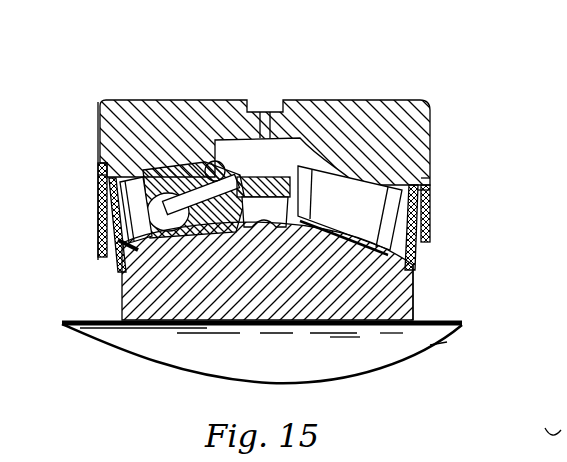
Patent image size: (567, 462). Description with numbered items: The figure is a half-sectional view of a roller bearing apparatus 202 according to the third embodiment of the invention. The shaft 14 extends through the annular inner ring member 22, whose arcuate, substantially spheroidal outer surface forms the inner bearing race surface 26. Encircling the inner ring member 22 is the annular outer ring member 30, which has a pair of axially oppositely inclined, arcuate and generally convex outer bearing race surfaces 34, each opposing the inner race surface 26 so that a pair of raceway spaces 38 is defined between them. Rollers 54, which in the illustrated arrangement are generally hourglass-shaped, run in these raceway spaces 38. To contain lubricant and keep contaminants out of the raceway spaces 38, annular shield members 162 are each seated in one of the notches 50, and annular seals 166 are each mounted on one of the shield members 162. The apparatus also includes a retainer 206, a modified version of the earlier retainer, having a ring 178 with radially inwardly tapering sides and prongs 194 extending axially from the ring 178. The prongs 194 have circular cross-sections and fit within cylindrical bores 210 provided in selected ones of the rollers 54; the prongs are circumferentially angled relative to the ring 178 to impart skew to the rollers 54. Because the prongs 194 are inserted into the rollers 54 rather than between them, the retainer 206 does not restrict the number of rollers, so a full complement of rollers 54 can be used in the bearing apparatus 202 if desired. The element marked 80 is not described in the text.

The roller bearing apparatus 202 is at (292, 67).
The outer ring member 30 is at (403, 100).
The notches 50 is at (97, 163).
The shield members 162 is at (94, 177).
The rollers 54 is at (94, 200).
The seals 166 is at (114, 252).
The raceway spaces 38 is at (118, 258).
The outer bearing race surfaces 34 is at (140, 176).
The prongs 194 is at (205, 160).
The ring 178 is at (263, 185).
The retainer 206 is at (292, 166).
The seal 80 is at (430, 178).
The cylindrical bores 210 is at (140, 236).
The inner bearing race surface 26 is at (258, 228).
The inner ring member 22 is at (299, 327).
The shaft 14 is at (275, 353).